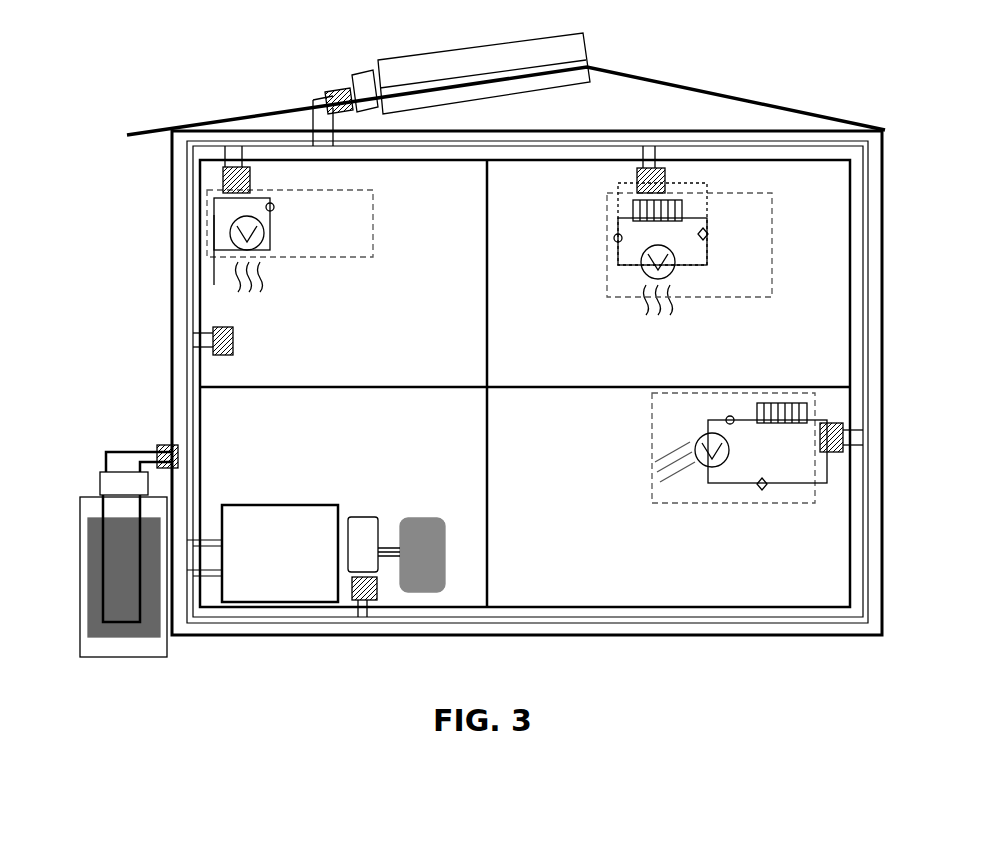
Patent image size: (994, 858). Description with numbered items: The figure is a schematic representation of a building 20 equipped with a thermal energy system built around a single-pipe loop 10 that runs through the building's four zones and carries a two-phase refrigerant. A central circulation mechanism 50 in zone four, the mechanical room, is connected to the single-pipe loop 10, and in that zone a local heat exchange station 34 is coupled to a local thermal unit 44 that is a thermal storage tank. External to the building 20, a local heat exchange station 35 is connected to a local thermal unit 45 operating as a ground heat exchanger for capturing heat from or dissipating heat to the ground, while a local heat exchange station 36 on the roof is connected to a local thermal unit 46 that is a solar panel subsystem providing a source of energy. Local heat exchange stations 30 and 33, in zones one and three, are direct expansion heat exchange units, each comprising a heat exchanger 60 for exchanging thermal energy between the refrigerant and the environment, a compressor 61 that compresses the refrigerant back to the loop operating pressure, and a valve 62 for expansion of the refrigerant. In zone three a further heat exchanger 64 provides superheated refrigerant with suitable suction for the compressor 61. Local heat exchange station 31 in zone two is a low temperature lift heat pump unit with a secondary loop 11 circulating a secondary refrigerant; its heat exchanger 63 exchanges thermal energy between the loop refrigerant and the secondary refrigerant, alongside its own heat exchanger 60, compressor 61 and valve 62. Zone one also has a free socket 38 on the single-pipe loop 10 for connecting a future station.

The single-pipe loop 10 is at (826, 145).
The secondary loop 11 is at (626, 266).
The building 20 is at (136, 130).
The local heat exchange station 30 is at (372, 194).
The local heat exchange station 31 is at (606, 218).
The local heat exchange station 33 is at (650, 412).
The local heat exchange station 34 is at (360, 516).
The local heat exchange station 35 is at (99, 480).
The local heat exchange station 36 is at (358, 76).
The free socket 38 is at (233, 346).
The local thermal unit 44 is at (423, 518).
The local thermal unit 45 is at (80, 577).
The local thermal unit 46 is at (438, 57).
The central circulation mechanism 50 is at (262, 553).
The heat exchanger 60 is at (258, 243).
The compressor 61 is at (273, 204).
The valve 62 is at (796, 527).
The heat exchanger 63 is at (682, 212).
The heat exchanger 64 is at (808, 412).